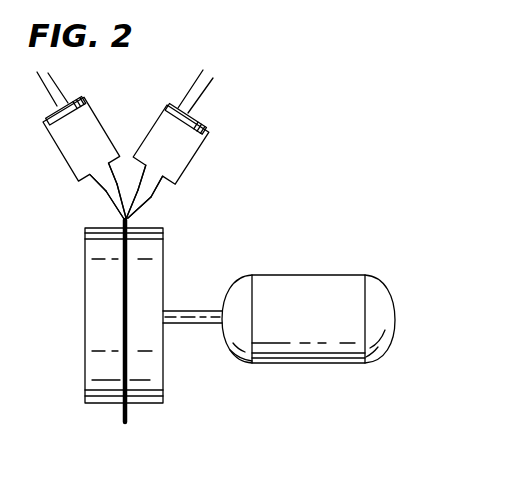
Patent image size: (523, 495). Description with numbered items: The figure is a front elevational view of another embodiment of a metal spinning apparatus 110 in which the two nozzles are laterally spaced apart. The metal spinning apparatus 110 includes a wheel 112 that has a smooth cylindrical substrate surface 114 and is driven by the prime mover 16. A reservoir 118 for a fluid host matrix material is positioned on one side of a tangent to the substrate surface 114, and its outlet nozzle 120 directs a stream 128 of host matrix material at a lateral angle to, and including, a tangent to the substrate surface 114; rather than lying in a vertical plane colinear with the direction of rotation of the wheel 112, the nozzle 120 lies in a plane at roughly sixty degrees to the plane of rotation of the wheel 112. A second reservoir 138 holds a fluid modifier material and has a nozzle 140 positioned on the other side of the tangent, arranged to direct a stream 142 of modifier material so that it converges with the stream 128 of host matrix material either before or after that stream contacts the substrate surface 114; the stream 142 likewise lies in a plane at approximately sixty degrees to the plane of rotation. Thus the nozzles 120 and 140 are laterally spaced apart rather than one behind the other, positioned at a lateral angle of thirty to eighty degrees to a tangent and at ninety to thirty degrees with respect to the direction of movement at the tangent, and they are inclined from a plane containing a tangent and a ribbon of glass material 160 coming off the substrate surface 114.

The prime mover 16 is at (357, 364).
The metal spinning apparatus 110 is at (197, 248).
The wheel 112 is at (85, 297).
The substrate surface 114 is at (147, 285).
The reservoir 118 is at (156, 121).
The outlet nozzle 120 is at (142, 186).
The stream of host matrix material 128 is at (130, 208).
The reservoir 138 is at (99, 119).
The nozzle 140 is at (108, 192).
The stream of fluid modifier material 142 is at (121, 217).
The ribbon of glass material 160 is at (126, 369).